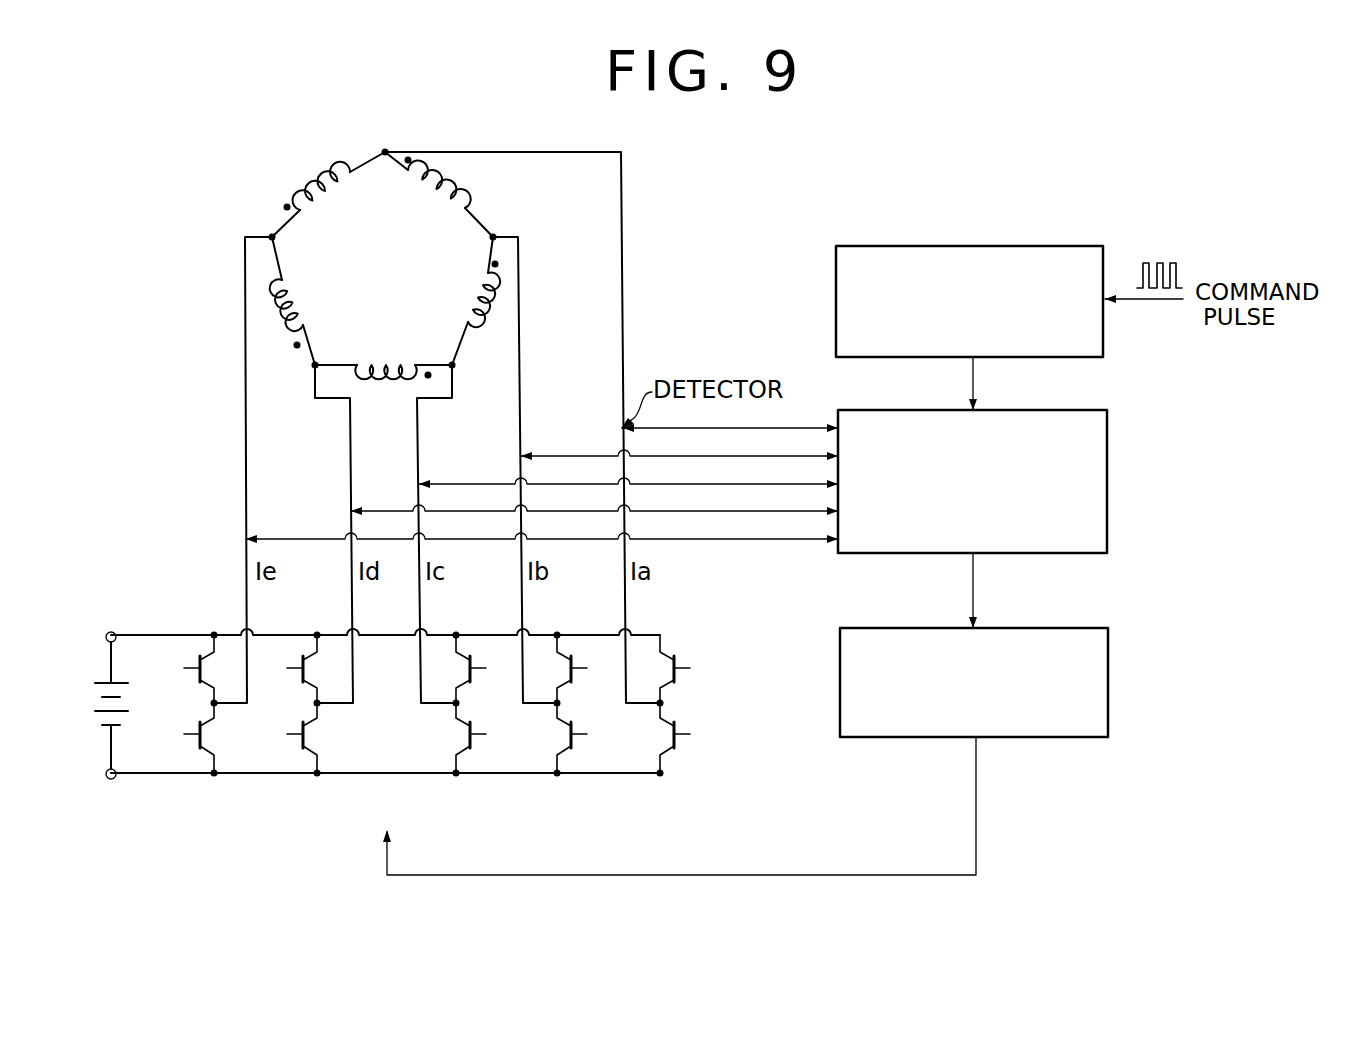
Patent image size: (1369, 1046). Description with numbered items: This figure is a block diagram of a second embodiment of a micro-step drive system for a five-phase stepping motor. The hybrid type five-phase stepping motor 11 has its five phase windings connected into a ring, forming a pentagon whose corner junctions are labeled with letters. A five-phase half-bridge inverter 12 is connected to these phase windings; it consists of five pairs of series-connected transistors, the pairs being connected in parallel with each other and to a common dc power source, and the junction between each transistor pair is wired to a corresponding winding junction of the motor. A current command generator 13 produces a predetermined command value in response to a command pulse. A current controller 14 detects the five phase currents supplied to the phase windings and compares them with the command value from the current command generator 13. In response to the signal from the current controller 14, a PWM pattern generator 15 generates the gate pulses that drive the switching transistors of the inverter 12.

The five-phase stepping motor 11 is at (272, 192).
The five-phase half-bridge inverter 12 is at (300, 782).
The current command generator 13 is at (1103, 337).
The current controller 14 is at (1108, 483).
The PWM pattern generator 15 is at (1108, 683).